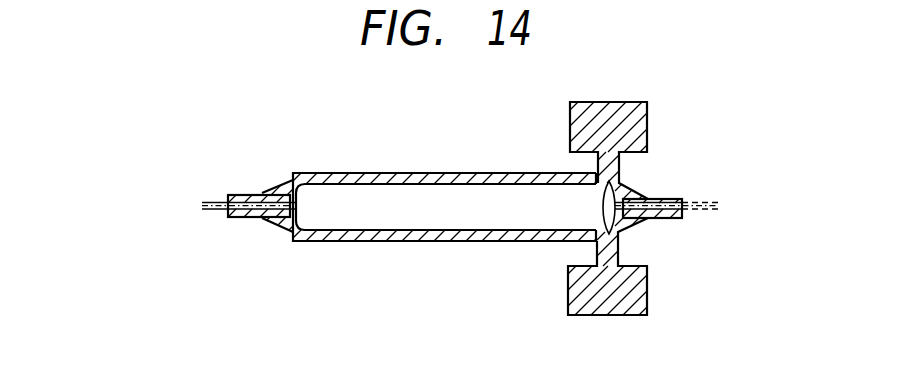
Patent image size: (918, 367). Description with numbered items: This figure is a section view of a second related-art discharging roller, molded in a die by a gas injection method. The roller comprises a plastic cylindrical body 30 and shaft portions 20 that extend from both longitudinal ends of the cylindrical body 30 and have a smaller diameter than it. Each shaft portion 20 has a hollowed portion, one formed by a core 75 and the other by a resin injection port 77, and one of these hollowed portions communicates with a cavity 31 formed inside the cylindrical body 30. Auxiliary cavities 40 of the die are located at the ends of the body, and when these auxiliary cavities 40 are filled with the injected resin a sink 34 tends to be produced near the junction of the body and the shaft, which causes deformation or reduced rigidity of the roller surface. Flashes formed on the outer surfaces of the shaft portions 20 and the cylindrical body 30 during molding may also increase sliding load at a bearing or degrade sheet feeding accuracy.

The shaft portion 20 is at (238, 218).
The cylindrical body 30 is at (383, 242).
The cavity 31 is at (457, 242).
The sink 34 is at (604, 207).
The auxiliary cavity 40 is at (626, 163).
The core 75 is at (702, 214).
The resin injection port 77 is at (214, 211).